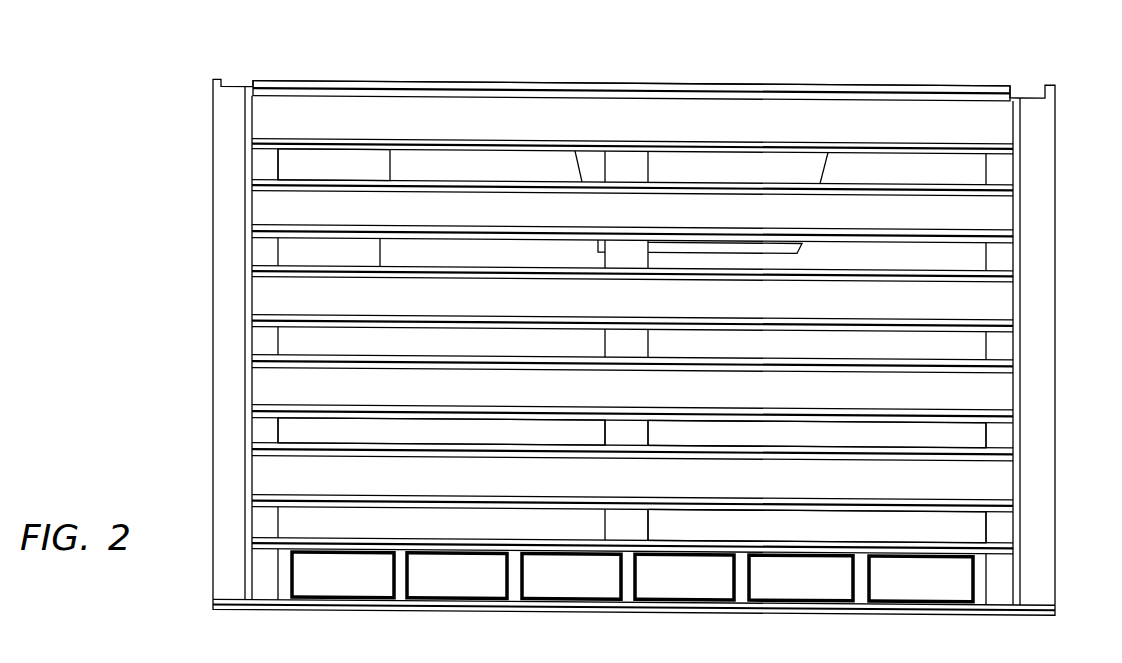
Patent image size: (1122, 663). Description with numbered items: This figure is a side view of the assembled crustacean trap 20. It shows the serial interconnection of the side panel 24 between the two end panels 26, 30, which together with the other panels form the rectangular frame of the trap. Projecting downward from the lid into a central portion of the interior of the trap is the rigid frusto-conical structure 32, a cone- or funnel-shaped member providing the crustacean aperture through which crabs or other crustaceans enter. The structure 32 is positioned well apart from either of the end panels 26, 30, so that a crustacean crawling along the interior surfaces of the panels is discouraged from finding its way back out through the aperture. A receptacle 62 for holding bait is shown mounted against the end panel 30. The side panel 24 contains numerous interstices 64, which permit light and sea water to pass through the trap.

The crustacean trap 20 is at (812, 50).
The side panel 24 is at (538, 82).
The end panel 26 is at (1043, 262).
The end panel 30 is at (222, 331).
The rigid frusto-conical structure 32 is at (797, 253).
The receptacle 62 is at (372, 167).
The interstices 64 is at (463, 443).